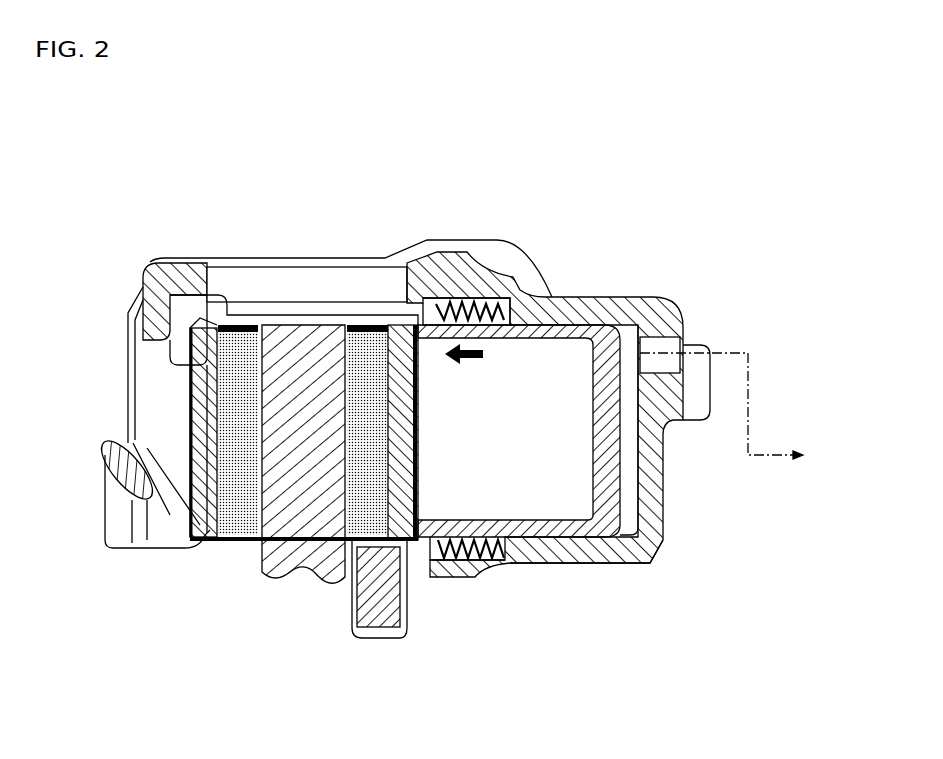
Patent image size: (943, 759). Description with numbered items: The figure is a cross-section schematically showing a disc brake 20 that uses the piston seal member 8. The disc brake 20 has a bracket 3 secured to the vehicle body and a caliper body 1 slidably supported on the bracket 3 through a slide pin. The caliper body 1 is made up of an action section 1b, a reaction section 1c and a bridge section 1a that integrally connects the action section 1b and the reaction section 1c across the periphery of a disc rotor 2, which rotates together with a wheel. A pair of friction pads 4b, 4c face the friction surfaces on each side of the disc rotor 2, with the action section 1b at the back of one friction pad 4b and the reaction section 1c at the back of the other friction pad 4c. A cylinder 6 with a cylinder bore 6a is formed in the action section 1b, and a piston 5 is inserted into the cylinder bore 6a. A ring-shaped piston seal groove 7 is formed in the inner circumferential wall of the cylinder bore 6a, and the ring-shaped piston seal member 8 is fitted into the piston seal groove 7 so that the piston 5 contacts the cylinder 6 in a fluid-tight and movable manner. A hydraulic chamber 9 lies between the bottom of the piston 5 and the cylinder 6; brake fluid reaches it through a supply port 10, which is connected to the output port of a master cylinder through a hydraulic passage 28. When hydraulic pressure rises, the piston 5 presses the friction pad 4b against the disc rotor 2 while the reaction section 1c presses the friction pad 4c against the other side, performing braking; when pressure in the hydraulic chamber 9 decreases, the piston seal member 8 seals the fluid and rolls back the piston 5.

The disc brake 20 is at (412, 199).
The caliper body 1 is at (283, 254).
The bridge section 1a is at (223, 287).
The action section 1b is at (660, 319).
The reaction section 1c is at (133, 346).
The disc rotor 2 is at (303, 553).
The bracket 3 is at (372, 603).
The friction pad 4b is at (425, 540).
The friction pad 4c is at (208, 462).
The piston 5 is at (649, 566).
The cylinder 6 is at (662, 546).
The cylinder bore 6a is at (577, 523).
The piston seal groove 7 is at (496, 321).
The piston seal member 8 is at (497, 318).
The hydraulic chamber 9 is at (628, 487).
The supply port 10 is at (665, 357).
The hydraulic passage 28 is at (748, 398).